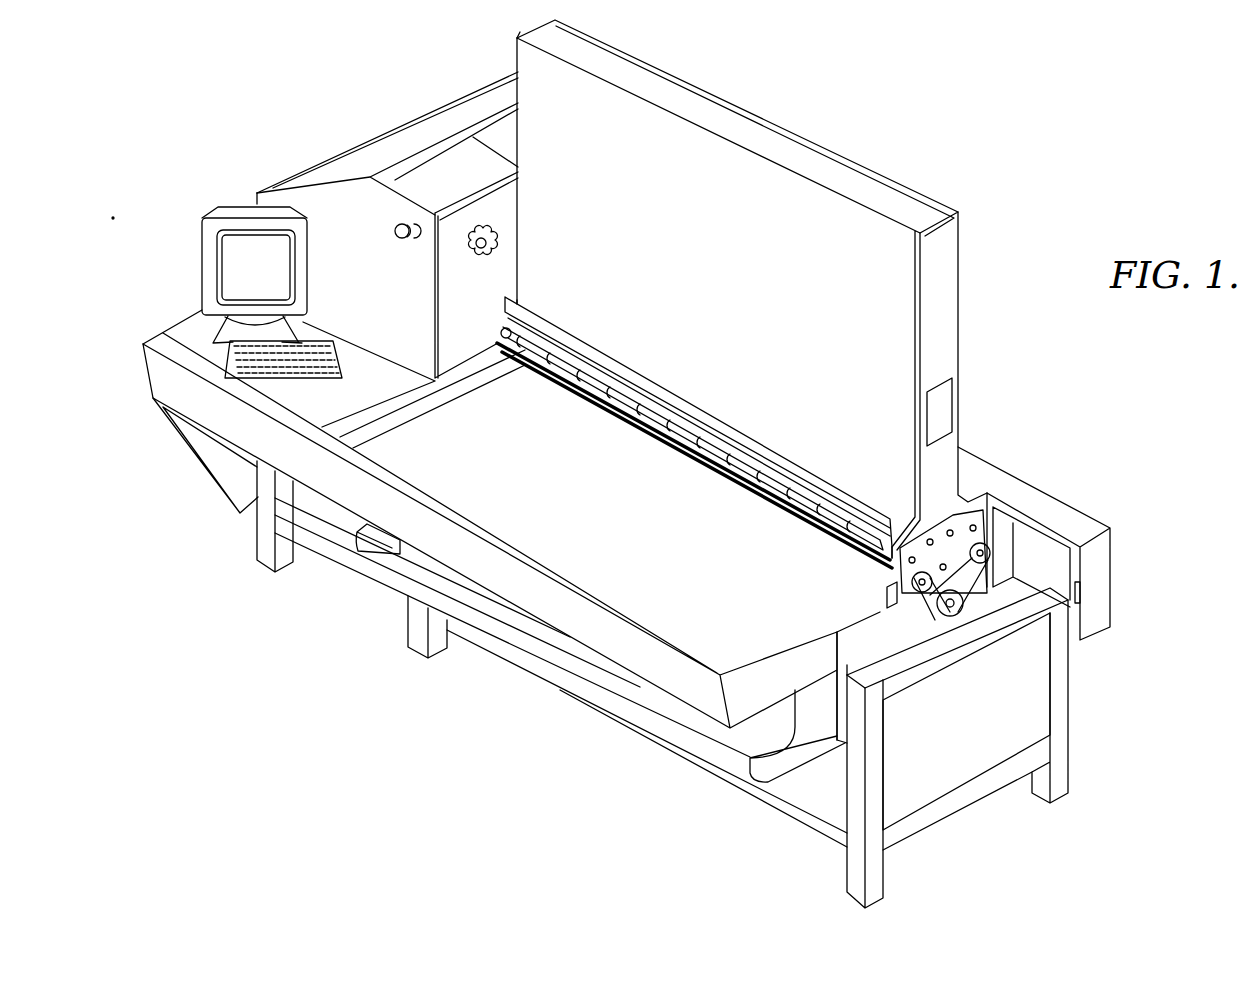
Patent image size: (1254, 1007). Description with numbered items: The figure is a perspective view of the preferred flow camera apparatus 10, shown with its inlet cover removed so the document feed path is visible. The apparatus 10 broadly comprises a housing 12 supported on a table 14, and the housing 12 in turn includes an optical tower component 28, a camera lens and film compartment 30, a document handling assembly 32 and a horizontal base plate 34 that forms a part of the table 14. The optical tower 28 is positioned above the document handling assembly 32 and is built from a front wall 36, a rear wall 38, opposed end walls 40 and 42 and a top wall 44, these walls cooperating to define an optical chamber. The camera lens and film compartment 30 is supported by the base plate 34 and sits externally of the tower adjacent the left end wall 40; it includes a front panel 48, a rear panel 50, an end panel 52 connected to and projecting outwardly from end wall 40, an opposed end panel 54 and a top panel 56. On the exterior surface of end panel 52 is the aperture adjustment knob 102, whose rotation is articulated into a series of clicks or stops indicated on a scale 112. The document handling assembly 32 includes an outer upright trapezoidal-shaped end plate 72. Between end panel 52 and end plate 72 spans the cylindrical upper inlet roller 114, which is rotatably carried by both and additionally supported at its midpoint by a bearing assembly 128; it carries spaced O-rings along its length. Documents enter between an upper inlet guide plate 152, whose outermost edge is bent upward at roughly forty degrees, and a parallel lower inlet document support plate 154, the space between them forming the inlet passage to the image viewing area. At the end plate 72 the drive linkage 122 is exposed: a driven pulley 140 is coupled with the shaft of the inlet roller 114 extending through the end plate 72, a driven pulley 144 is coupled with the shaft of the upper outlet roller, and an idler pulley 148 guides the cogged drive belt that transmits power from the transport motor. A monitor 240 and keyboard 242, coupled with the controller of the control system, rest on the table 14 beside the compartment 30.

The apparatus 10 is at (1088, 417).
The housing 12 is at (1032, 474).
The table 14 is at (1063, 720).
The optical tower component 28 is at (964, 350).
The camera lens and film compartment 30 is at (392, 120).
The document handling assembly 32 is at (970, 488).
The horizontal base plate 34 is at (882, 668).
The front wall 36 is at (850, 230).
The rear wall 38 is at (962, 247).
The end wall 40 is at (520, 29).
The end wall 42 is at (940, 302).
The top wall 44 is at (788, 143).
The front panel 48 is at (410, 347).
The rear panel 50 is at (493, 75).
The end panel 52 is at (455, 356).
The end panel 54 is at (265, 187).
The top panel 56 is at (360, 148).
The end plate 72 is at (932, 500).
The aperture adjustment knob 102 is at (495, 267).
The scale 112 is at (484, 230).
The upper inlet roller 114 is at (825, 512).
The drive linkage 122 is at (933, 628).
The bearing assembly 128 is at (697, 437).
The driven pulley 140 is at (863, 632).
The driven pulley 144 is at (990, 548).
The idler pulley 148 is at (953, 612).
The upper inlet guide plate 152 is at (652, 431).
The lower inlet document support plate 154 is at (723, 497).
The monitor 240 is at (202, 257).
The keyboard 242 is at (278, 382).